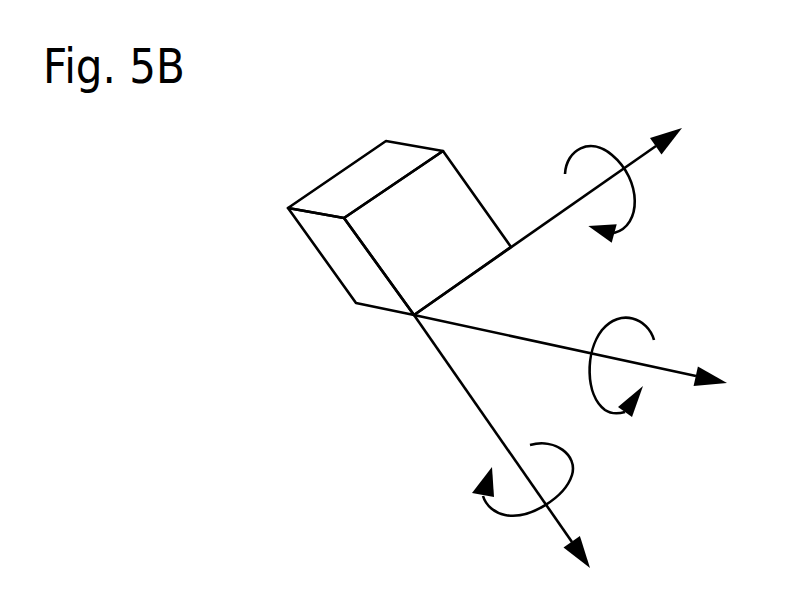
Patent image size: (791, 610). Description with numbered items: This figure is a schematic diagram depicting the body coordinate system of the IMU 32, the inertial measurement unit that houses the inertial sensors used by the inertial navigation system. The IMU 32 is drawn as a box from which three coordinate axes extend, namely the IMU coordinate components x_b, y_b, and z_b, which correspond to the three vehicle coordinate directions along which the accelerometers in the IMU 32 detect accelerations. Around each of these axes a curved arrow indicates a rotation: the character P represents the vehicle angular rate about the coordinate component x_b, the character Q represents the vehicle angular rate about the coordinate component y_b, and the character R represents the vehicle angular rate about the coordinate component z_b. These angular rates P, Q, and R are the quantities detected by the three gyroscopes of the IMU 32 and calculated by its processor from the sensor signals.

The IMU 32 is at (399, 228).
The IMU coordinate component x_b xb is at (556, 208).
The IMU coordinate component y_b yb is at (572, 350).
The IMU coordinate component z_b zb is at (502, 441).
The vehicle angular rate P is at (600, 179).
The vehicle angular rate Q is at (622, 355).
The vehicle angular rate R is at (510, 479).